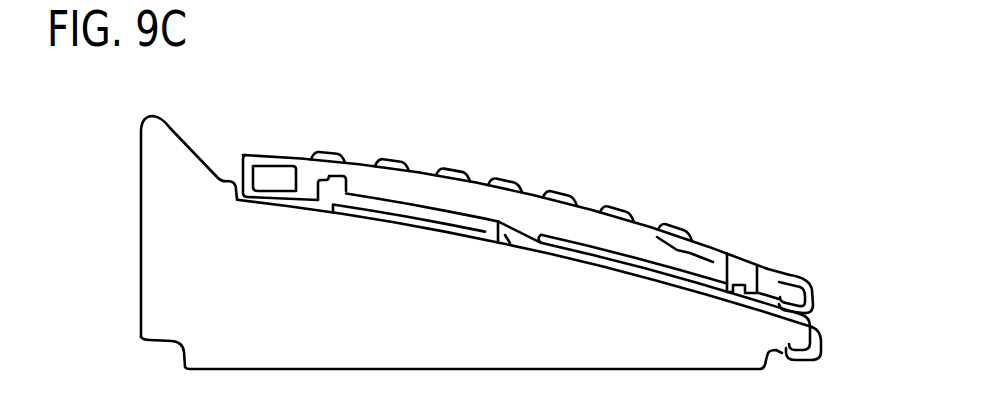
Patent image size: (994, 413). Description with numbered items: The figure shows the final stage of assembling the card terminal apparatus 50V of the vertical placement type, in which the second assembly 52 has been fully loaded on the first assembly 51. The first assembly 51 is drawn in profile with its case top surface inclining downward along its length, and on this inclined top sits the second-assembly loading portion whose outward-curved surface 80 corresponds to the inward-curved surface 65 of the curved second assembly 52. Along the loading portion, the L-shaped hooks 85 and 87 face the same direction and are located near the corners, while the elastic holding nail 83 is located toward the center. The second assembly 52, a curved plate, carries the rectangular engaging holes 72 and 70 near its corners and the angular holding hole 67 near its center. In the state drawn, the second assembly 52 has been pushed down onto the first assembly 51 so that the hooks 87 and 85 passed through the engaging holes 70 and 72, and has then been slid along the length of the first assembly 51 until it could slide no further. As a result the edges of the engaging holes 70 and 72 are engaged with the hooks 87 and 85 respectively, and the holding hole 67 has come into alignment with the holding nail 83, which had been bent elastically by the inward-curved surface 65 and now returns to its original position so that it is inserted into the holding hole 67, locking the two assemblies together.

The card terminal apparatus of the vertical placement type 50V is at (272, 97).
The first assembly 51 is at (140, 245).
The second assembly 52 is at (467, 172).
The inward-curved surface 65 is at (622, 280).
The holding hole 67 is at (507, 218).
The engaging hole 70 is at (730, 256).
The engaging hole 72 is at (305, 190).
The surface 80 is at (643, 230).
The holding nail 83 is at (502, 250).
The hook 85 is at (343, 178).
The hook 87 is at (772, 272).